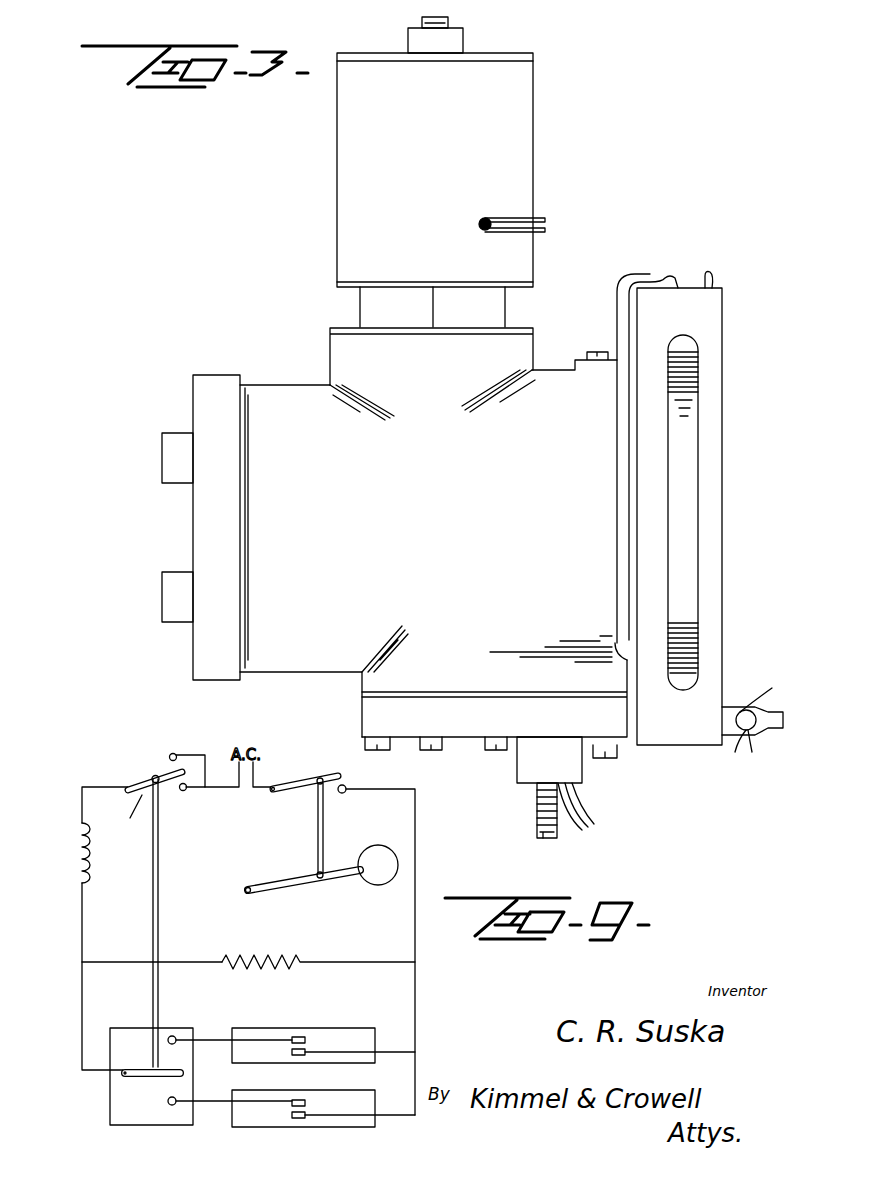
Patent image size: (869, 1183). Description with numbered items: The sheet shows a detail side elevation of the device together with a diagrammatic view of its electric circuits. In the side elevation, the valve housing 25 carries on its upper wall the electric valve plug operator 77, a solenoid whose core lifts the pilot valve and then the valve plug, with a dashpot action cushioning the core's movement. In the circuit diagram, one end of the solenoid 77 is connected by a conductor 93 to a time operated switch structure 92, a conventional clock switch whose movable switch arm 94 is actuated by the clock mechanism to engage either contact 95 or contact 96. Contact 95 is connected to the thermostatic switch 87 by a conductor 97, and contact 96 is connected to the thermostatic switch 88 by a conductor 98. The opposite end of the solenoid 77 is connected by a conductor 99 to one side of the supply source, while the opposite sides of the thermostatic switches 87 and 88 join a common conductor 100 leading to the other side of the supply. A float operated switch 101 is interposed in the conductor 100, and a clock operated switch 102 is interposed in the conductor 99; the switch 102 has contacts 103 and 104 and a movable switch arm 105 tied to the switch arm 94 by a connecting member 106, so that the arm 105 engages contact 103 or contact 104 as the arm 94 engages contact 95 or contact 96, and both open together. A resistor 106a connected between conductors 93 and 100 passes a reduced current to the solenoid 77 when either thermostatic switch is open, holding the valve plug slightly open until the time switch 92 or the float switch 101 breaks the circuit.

In FIG. 3, the electric valve plug operator 77 is at (546, 192).
In FIG. 9, the electric valve plug operator 77 is at (100, 889).
In FIG. 3, the valve housing 25 is at (279, 378).
In FIG. 3, the resistor 106a is at (708, 578).
In FIG. 9, the resistor 106a is at (270, 958).
In FIG. 9, the conductor 99 is at (88, 787).
In FIG. 9, the clock operated switch 102 is at (151, 769).
In FIG. 9, the contact 103 is at (176, 754).
In FIG. 9, the contact 104 is at (184, 791).
In FIG. 9, the movable switch arm 105 is at (125, 819).
In FIG. 9, the connecting member 106 is at (163, 904).
In FIG. 9, the float operated switch 101 is at (307, 778).
In FIG. 9, the common conductor 100 is at (430, 878).
In FIG. 9, the conductor 93 is at (78, 1043).
In FIG. 9, the movable switch member or arm 94 is at (135, 1078).
In FIG. 9, the time operated switch structure 92 is at (128, 1104).
In FIG. 9, the contact 95 is at (178, 1034).
In FIG. 9, the contact 96 is at (180, 1096).
In FIG. 9, the conductor 97 is at (215, 1042).
In FIG. 9, the conductor 98 is at (210, 1104).
In FIG. 9, the thermostatic switch 87 is at (338, 1023).
In FIG. 9, the thermostatic switch 88 is at (370, 1108).